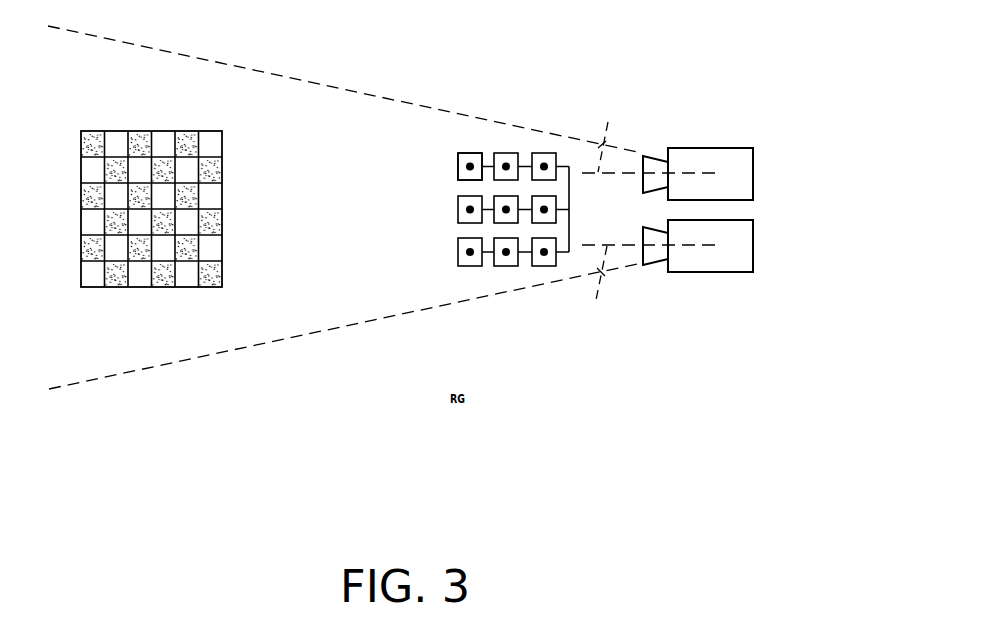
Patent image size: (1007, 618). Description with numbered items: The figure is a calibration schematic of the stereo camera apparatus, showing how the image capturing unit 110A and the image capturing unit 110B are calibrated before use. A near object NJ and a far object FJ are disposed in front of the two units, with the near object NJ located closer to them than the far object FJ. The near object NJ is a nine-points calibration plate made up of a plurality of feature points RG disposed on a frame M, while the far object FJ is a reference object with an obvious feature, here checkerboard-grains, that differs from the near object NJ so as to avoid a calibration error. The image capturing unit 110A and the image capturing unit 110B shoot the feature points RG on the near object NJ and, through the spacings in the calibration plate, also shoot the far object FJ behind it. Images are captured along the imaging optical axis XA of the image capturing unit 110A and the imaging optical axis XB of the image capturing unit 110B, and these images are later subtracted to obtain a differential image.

The far object FJ is at (222, 172).
The near object NJ is at (405, 147).
The feature points RG is at (466, 166).
The frame M is at (490, 208).
The imaging optical axis XB is at (609, 131).
The imaging optical axis XA is at (598, 287).
The image capturing unit 110B is at (753, 165).
The image capturing unit 110A is at (753, 237).